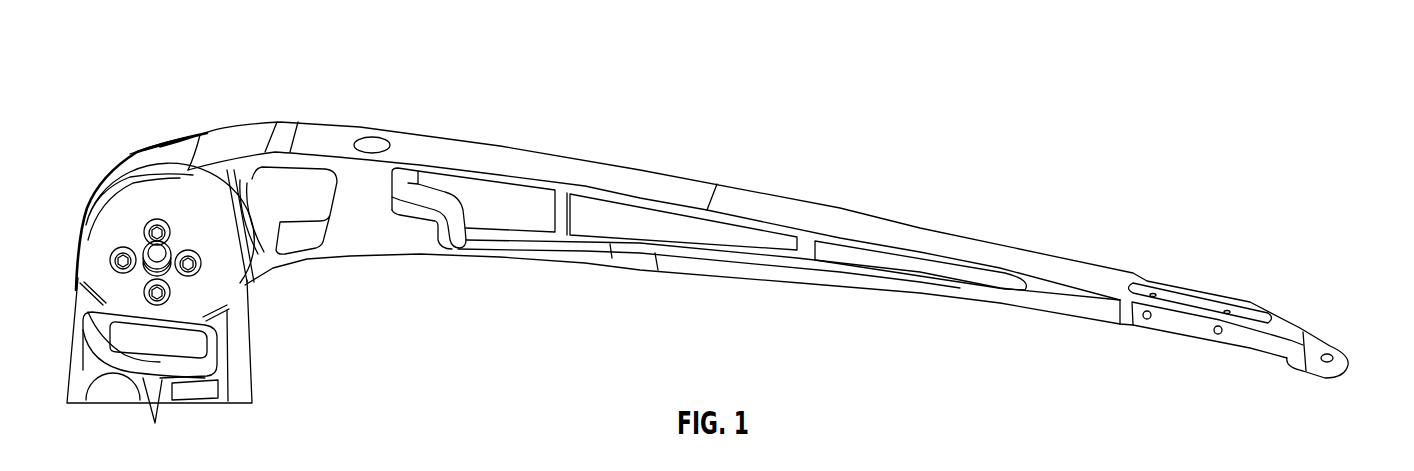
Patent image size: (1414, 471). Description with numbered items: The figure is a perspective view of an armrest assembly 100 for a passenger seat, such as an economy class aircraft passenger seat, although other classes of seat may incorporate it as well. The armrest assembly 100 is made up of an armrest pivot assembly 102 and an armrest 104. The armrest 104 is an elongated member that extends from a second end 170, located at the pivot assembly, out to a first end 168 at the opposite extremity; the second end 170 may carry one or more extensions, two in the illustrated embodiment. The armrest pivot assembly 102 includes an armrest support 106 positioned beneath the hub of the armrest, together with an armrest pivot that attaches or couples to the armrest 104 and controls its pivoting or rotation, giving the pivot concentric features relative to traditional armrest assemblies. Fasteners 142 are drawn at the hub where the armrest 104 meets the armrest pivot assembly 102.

The armrest assembly 100 is at (600, 90).
The armrest pivot assembly 102 is at (172, 96).
The armrest 104 is at (537, 163).
The armrest support 106 is at (228, 370).
The fasteners 142 is at (155, 222).
The first end 168 is at (1350, 358).
The second end 170 is at (200, 135).